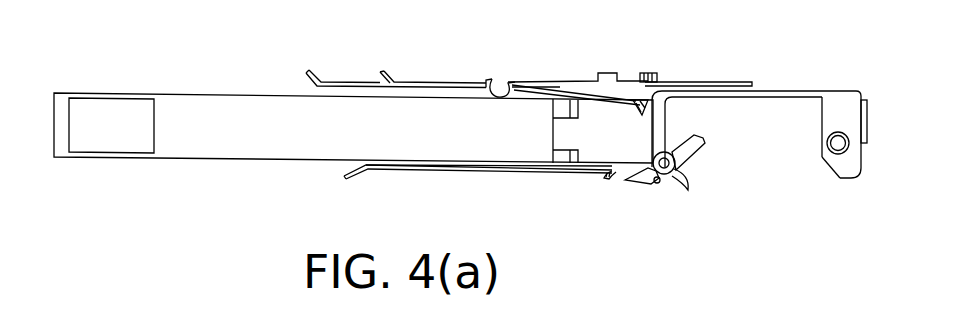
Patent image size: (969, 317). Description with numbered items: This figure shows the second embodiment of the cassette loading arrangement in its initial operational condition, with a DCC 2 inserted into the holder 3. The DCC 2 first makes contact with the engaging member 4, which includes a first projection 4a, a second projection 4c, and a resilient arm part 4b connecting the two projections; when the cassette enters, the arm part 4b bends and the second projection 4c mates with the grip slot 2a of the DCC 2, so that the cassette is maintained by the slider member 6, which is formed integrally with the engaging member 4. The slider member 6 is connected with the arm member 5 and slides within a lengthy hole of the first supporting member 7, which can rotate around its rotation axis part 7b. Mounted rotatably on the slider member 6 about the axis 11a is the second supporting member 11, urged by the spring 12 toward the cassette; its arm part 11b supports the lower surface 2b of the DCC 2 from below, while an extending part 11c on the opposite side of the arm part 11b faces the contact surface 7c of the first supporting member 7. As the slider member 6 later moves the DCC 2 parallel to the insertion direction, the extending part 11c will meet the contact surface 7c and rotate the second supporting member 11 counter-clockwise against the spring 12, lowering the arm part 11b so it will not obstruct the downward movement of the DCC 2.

The DCC 2 is at (247, 94).
The grip slot 2a is at (640, 116).
The lower surface 2b is at (604, 173).
The holder 3 is at (424, 86).
The engaging member 4 is at (605, 80).
The first projection 4a is at (508, 84).
The arm part 4b is at (568, 85).
The second projection 4c is at (638, 100).
The arm member 5 is at (735, 81).
The slider member 6 is at (668, 88).
The first supporting member 7 is at (786, 91).
The rotation axis part 7b is at (835, 162).
The contact surface 7c is at (866, 110).
The second supporting member 11 is at (654, 183).
The axis 11a is at (676, 177).
The arm part 11b is at (631, 186).
The extending part 11c is at (700, 148).
The spring 12 is at (659, 186).